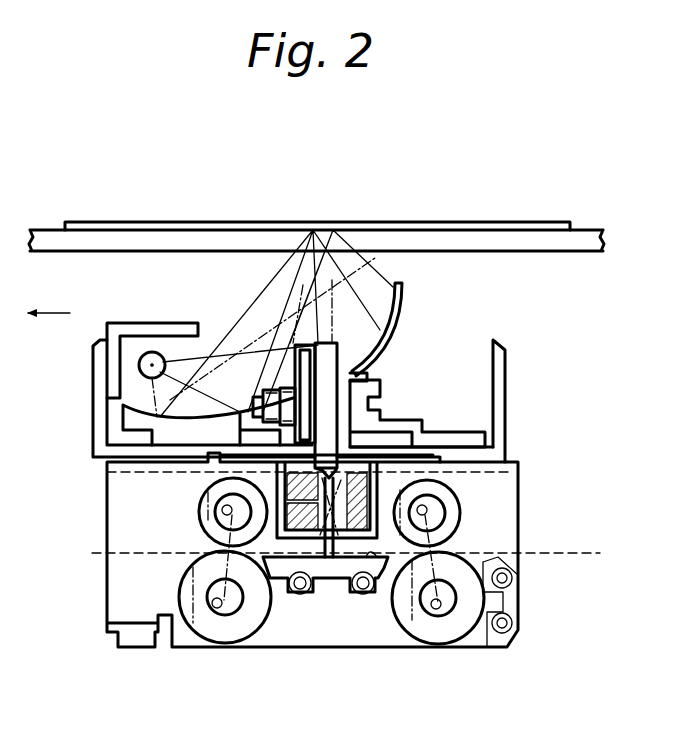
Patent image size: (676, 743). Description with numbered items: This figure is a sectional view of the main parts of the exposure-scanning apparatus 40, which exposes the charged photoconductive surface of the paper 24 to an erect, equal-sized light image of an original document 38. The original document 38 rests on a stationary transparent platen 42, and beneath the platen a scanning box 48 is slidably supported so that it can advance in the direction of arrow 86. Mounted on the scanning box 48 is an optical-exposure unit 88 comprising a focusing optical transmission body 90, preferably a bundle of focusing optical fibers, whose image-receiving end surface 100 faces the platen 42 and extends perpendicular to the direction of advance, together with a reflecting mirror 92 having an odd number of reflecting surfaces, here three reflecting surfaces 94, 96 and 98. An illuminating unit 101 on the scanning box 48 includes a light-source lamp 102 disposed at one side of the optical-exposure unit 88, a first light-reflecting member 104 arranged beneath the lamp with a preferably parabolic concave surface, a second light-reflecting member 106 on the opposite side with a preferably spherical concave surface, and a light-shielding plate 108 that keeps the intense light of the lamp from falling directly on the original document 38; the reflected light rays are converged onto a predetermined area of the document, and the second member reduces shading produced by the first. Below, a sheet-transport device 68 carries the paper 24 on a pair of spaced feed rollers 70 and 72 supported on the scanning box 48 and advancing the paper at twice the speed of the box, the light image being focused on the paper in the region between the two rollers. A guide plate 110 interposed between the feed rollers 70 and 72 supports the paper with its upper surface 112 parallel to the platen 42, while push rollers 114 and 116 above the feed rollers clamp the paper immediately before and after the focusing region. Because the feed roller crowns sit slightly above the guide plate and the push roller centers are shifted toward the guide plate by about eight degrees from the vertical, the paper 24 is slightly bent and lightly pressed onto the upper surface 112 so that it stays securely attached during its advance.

The original document 38 is at (408, 230).
The transparent platen 42 is at (583, 240).
The exposure-scanning apparatus 40 is at (528, 313).
The arrow direction 86 is at (45, 313).
The illuminating unit 101 is at (138, 345).
The light-source lamp 102 is at (152, 352).
The light-shielding plate 108 is at (195, 323).
The first light-reflecting member 104 is at (178, 434).
The reflecting surface 96 is at (340, 470).
The optical-exposure unit 88 is at (338, 437).
The focusing optical transmission body 90 is at (330, 408).
The image-receiving end surface 100 is at (403, 290).
The second light-reflecting member 106 is at (397, 310).
The scanning box 48 is at (520, 473).
The reflecting surface 94 is at (283, 477).
The reflecting mirror 92 is at (307, 517).
The reflecting surface 98 is at (332, 500).
The guide plate 110 is at (342, 570).
The upper surface 112 is at (380, 592).
The push roller 114 is at (457, 522).
The feed roller 70 is at (441, 641).
The push roller 116 is at (203, 535).
The feed roller 72 is at (200, 632).
The paper 24 is at (582, 548).
The sheet-transport device 68 is at (473, 645).